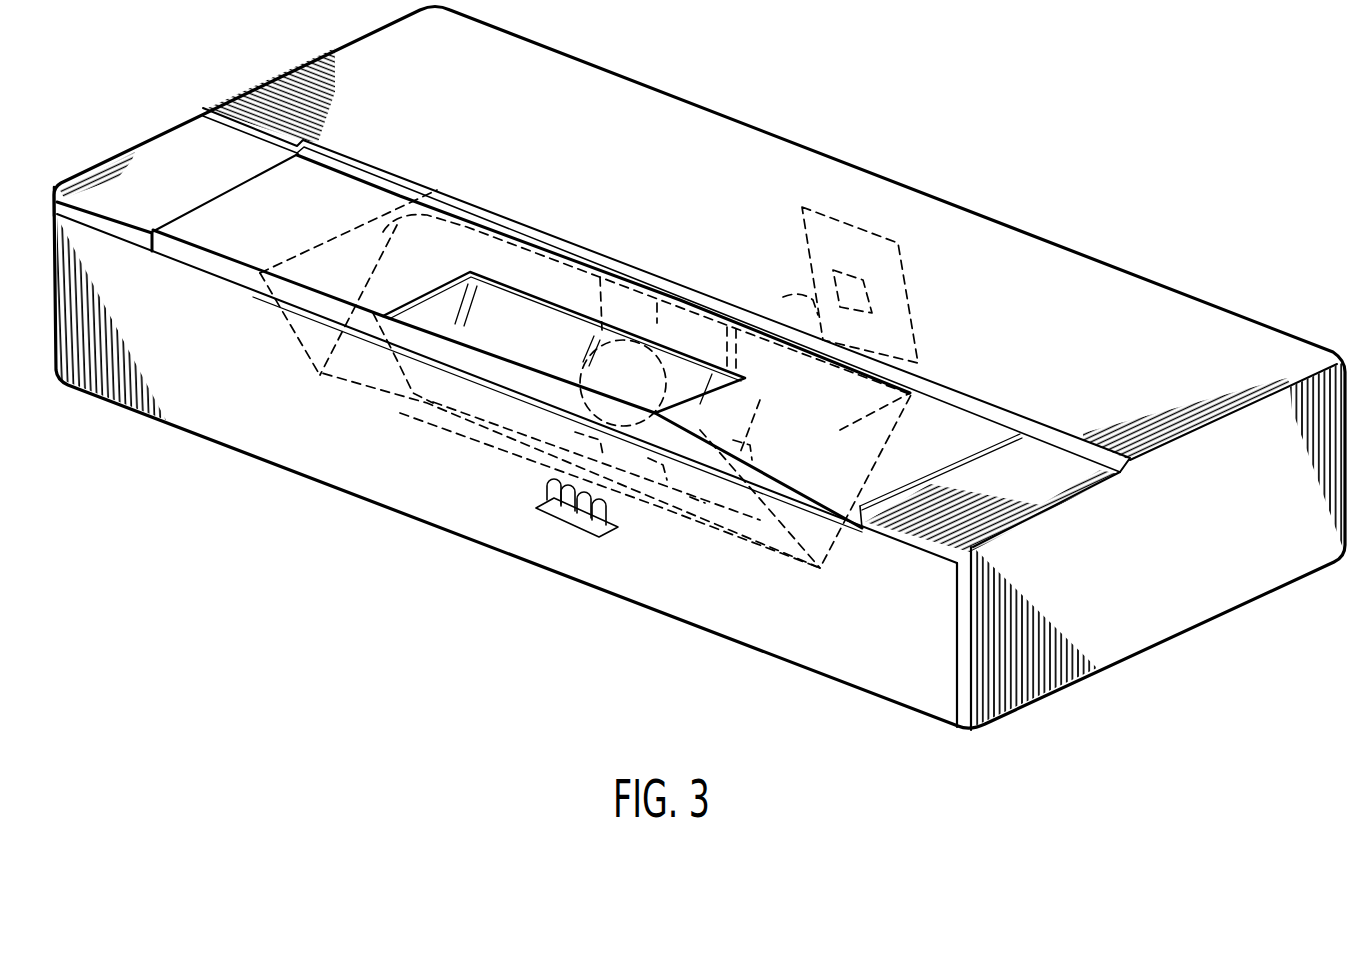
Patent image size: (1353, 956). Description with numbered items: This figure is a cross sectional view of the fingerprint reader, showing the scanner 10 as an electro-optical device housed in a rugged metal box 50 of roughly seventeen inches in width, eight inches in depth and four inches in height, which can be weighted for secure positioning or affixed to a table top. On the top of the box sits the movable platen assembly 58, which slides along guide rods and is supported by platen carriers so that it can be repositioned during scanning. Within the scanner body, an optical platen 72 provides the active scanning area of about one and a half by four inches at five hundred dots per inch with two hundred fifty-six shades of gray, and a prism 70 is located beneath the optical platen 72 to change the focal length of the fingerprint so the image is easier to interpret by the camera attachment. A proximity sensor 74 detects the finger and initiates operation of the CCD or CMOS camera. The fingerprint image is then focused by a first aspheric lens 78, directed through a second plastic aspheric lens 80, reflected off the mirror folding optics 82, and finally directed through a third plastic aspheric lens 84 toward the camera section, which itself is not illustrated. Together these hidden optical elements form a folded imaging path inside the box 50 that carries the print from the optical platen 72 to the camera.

The scanner 10 is at (1012, 744).
The rugged metal box 50 is at (813, 662).
The movable platen assembly 58 is at (729, 108).
The prism 70 is at (433, 403).
The optical platen 72 is at (227, 242).
The proximity sensor 74 is at (564, 523).
The first aspheric lens 78 is at (812, 312).
The second plastic aspheric lens 80 is at (730, 300).
The mirror folding optics 82 is at (648, 392).
The third plastic aspheric lens 84 is at (600, 277).